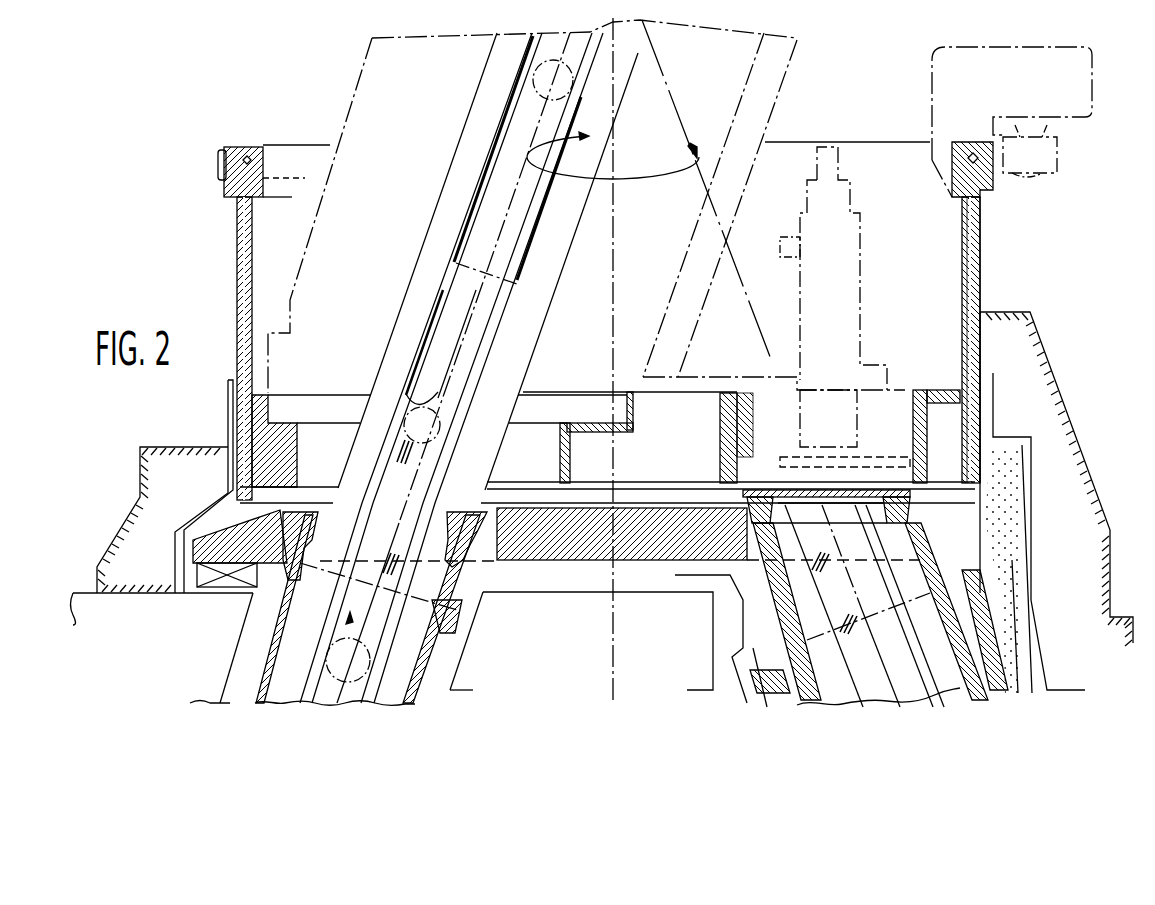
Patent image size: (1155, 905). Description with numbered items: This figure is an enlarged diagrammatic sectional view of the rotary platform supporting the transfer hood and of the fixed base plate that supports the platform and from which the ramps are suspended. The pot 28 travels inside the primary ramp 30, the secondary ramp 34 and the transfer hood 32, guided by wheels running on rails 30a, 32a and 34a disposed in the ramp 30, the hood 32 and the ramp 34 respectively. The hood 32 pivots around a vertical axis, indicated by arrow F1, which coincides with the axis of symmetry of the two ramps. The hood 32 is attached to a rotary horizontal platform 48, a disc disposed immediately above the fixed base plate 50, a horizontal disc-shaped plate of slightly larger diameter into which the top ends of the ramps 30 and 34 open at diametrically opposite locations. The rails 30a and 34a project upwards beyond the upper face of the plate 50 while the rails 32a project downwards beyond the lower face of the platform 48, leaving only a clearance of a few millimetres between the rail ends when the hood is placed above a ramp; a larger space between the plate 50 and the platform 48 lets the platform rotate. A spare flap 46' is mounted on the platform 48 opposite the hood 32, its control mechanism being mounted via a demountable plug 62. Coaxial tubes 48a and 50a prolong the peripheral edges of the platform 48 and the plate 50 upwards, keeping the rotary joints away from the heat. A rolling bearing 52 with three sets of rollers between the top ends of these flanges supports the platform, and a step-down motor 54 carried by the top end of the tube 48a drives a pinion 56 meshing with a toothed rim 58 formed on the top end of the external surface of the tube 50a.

The pot 28 is at (438, 197).
The primary ramp 30 is at (790, 698).
The rails 30a is at (907, 680).
The transfer hood 32 is at (362, 78).
The rails 32a is at (516, 111).
The secondary ramp 34 is at (440, 655).
The rails 34a is at (316, 667).
The spare flap 46' is at (741, 436).
The rotary horizontal platform 48 is at (943, 390).
The coaxial tube 48a is at (980, 217).
The fixed base plate 50 is at (648, 523).
The coaxial tube 50a is at (981, 245).
The rolling bearing 52 is at (237, 150).
The step-down motor 54 is at (1057, 89).
The pinion 56 is at (1058, 155).
The toothed rim 58 is at (218, 163).
The demountable plug 62 is at (898, 400).
The arrow F1 is at (672, 180).